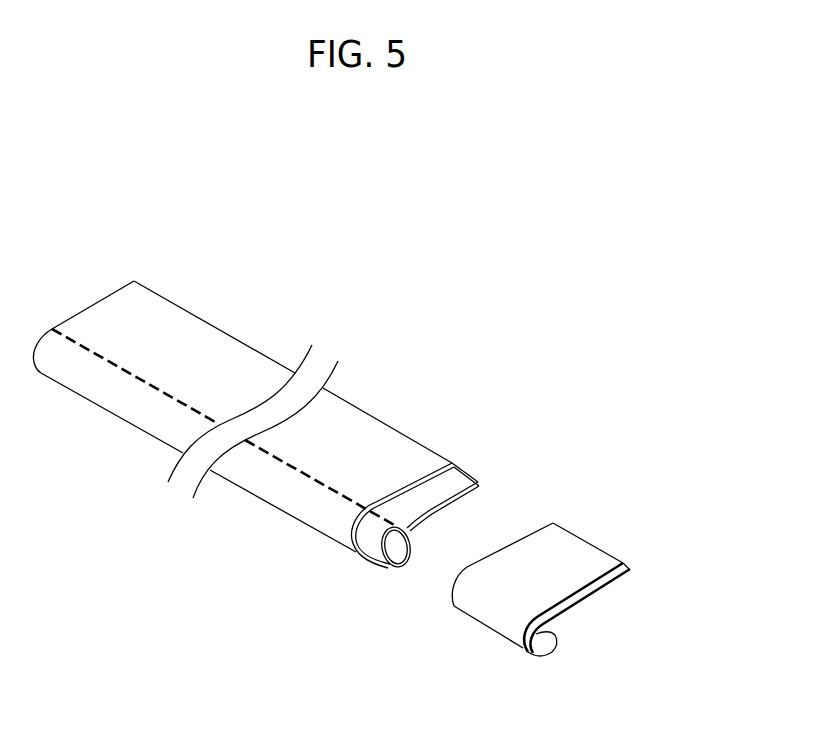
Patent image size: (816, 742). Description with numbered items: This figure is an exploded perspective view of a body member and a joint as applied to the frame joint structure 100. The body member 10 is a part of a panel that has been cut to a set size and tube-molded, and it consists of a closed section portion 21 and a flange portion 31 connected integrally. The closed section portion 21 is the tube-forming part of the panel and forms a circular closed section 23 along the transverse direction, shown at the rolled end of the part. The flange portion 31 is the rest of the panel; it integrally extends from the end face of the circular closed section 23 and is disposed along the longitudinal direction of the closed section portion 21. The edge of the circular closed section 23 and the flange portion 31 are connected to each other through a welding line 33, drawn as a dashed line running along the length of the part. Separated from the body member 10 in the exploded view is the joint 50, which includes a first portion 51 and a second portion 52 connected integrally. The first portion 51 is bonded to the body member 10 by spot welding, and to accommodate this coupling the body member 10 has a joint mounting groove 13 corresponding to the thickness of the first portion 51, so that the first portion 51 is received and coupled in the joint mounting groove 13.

The frame joint structure 100 is at (534, 260).
The body member 10 is at (104, 433).
The joint mounting groove 13 is at (440, 481).
The closed section portion 21 is at (414, 554).
The circular closed section 23 is at (388, 569).
The flange portion 31 is at (360, 417).
The welding line 33 is at (288, 468).
The joint 50 is at (482, 647).
The first portion 51 is at (568, 538).
The second portion 52 is at (630, 568).